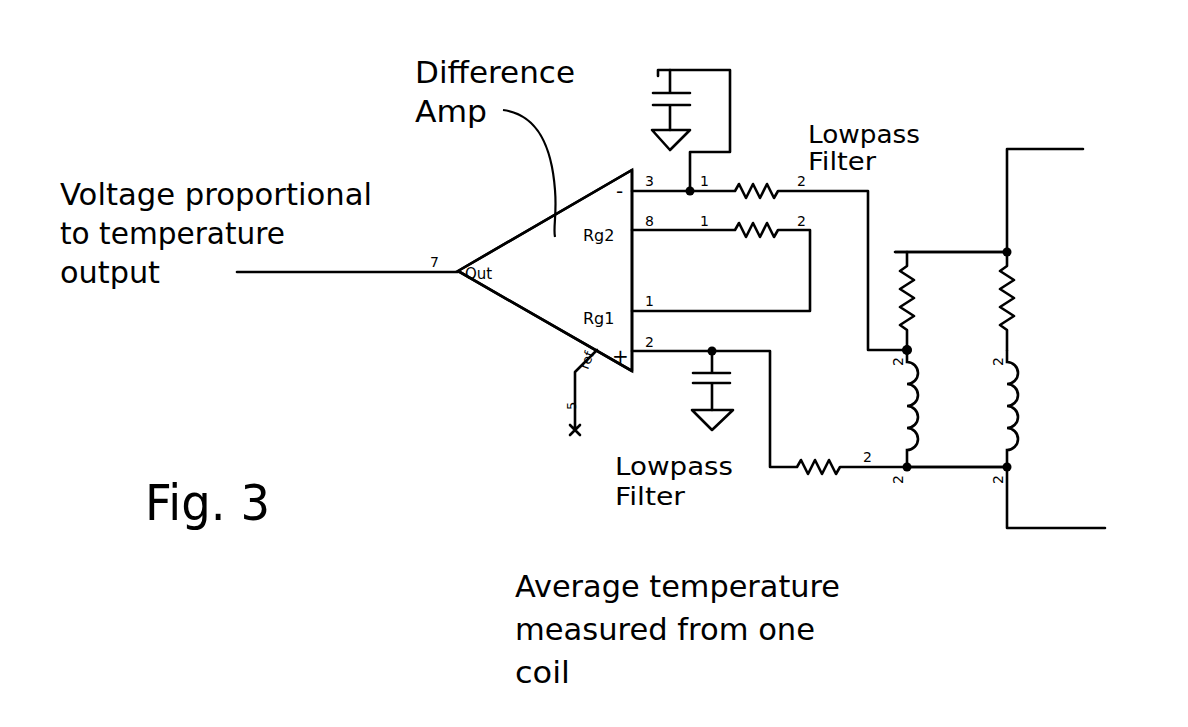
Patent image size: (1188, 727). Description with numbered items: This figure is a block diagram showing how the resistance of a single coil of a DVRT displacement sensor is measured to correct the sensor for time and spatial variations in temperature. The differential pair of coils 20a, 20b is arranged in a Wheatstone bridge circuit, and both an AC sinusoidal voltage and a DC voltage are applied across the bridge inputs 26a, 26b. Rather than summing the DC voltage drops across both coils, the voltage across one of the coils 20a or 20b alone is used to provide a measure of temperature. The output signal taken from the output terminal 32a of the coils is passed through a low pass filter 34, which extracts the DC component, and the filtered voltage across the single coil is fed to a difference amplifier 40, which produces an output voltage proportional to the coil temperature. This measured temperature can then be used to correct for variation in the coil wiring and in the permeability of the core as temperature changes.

The coil 20a is at (905, 406).
The coil 20b is at (1007, 423).
The bridge input 26a is at (962, 468).
The bridge input 26b is at (962, 252).
The output terminal 32a is at (907, 350).
The low pass filter 34 is at (758, 108).
The difference amplifier 40 is at (540, 288).